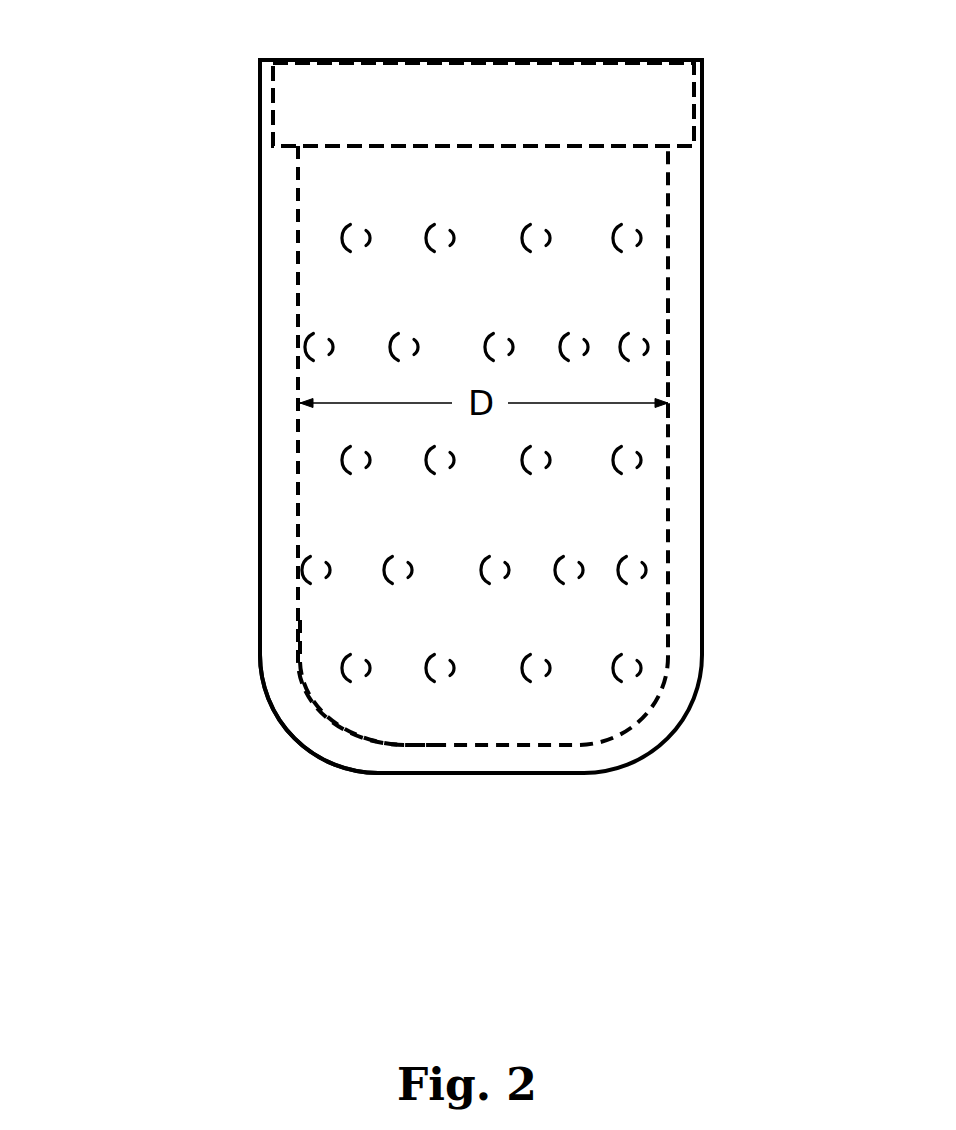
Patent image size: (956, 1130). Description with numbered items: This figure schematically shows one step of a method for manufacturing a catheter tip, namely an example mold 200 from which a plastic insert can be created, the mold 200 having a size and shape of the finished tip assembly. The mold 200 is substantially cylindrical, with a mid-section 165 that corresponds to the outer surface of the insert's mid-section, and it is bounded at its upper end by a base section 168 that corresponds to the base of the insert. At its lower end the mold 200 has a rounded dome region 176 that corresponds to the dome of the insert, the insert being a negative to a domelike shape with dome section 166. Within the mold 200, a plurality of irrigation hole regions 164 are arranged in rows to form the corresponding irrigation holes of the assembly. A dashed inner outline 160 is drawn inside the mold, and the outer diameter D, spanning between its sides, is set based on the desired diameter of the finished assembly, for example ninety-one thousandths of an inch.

The mold 200 is at (258, 300).
The base section 168 is at (265, 94).
The absorbent core 160 is at (298, 192).
The irrigation hole regions 164 is at (310, 560).
The mid-section 165 is at (668, 358).
The dome section 166 is at (352, 705).
The dome region 176 is at (332, 739).